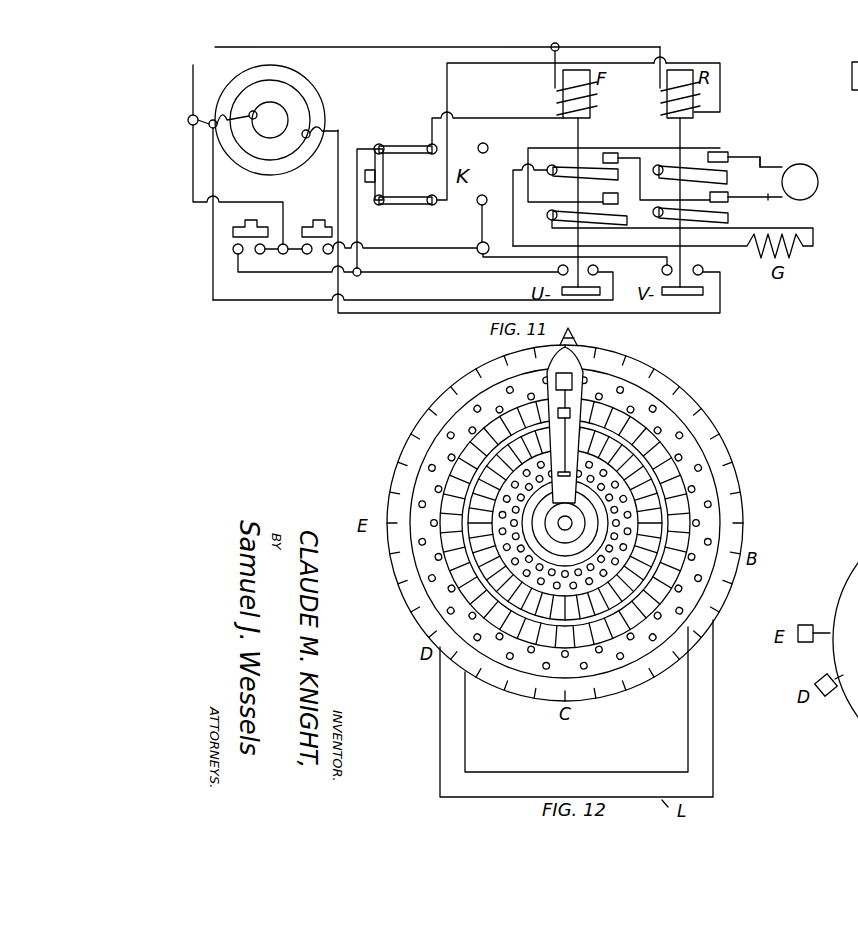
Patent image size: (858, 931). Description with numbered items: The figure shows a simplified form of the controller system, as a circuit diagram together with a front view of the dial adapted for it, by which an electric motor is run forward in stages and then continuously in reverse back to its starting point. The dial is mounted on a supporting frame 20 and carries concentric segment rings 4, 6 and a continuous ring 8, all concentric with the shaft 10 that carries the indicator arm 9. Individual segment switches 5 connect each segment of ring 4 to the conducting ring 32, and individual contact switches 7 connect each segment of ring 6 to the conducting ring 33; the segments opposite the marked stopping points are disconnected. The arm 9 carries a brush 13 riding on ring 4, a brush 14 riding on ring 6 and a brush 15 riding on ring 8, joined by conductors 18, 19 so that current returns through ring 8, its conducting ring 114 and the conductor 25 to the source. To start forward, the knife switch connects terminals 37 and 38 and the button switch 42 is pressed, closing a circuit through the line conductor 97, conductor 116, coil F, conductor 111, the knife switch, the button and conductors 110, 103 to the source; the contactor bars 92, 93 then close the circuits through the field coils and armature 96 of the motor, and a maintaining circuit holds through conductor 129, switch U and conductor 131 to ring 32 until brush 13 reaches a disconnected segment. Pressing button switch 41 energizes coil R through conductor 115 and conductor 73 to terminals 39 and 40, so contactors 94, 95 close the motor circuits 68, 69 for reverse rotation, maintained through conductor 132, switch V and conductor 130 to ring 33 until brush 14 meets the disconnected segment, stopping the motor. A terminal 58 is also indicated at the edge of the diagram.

In FIG. 12, the segment ring 4 is at (613, 417).
In FIG. 12, the individual segment switches 5 is at (605, 383).
In FIG. 12, the segment ring 6 is at (628, 457).
In FIG. 12, the individual contact switches 7 is at (618, 477).
In FIG. 12, the continuous ring 8 is at (613, 503).
In FIG. 12, the indicator arm 9 is at (562, 367).
In FIG. 12, the shaft 10 is at (572, 528).
In FIG. 12, the brush 13 is at (556, 383).
In FIG. 12, the brush 14 is at (558, 415).
In FIG. 12, the brush 15 is at (558, 473).
In FIG. 12, the conductor 18 is at (562, 398).
In FIG. 12, the conductor 19 is at (553, 437).
In FIG. 12, the supporting frame 20 is at (576, 708).
In FIG. 11, the conductor to current source 25 is at (211, 180).
In FIG. 11, the conducting ring 32 is at (325, 120).
In FIG. 11, the conducting ring 33 is at (310, 112).
In FIG. 11, the terminal 37 is at (378, 145).
In FIG. 11, the terminal 38 is at (426, 162).
In FIG. 11, the terminal 39 is at (549, 145).
In FIG. 11, the terminal 40 is at (482, 198).
In FIG. 11, the button switch 41 is at (320, 213).
In FIG. 11, the button switch 42 is at (251, 216).
In FIG. 11, the terminal 58 is at (850, 74).
In FIG. 11, the motor circuit 68 is at (771, 187).
In FIG. 11, the motor circuit 69 is at (767, 165).
In FIG. 11, the conductor 73 is at (723, 90).
In FIG. 11, the contactor bar 92 is at (597, 168).
In FIG. 11, the contactor bar 93 is at (680, 224).
In FIG. 11, the contactor 94 is at (728, 173).
In FIG. 11, the contactor 95 is at (731, 215).
In FIG. 11, the armature 96 is at (820, 180).
In FIG. 11, the line conductor 97 is at (421, 62).
In FIG. 11, the conductor 103 is at (285, 198).
In FIG. 11, the conductor 110 is at (277, 254).
In FIG. 11, the conductor 111 is at (428, 125).
In FIG. 11, the conducting ring 114 is at (282, 103).
In FIG. 11, the conductor 115 is at (660, 71).
In FIG. 11, the conductor 116 is at (553, 70).
In FIG. 11, the conductor 129 is at (359, 220).
In FIG. 11, the conductor 130 is at (342, 287).
In FIG. 11, the conductor 131 is at (273, 310).
In FIG. 11, the conductor 132 is at (428, 244).